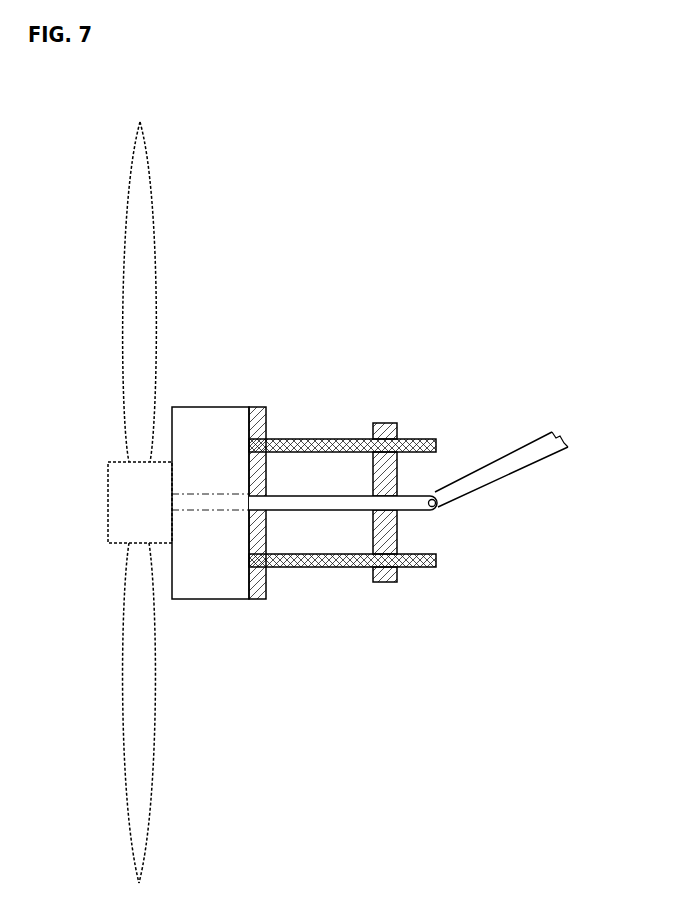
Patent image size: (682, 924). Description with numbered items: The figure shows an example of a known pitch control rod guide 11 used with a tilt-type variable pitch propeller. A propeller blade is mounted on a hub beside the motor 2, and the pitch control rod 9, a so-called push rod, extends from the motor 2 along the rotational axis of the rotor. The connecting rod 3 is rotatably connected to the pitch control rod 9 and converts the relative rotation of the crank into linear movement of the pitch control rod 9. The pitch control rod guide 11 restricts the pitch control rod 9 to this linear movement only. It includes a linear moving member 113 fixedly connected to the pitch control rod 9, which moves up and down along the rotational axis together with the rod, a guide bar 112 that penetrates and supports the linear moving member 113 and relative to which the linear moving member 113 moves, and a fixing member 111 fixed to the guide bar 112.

The motor 2 is at (209, 418).
The connecting rod 3 is at (527, 461).
The pitch control rod 9 is at (305, 506).
The pitch control rod guide 11 is at (338, 400).
The fixing member 111 is at (260, 413).
The guide bar 112 is at (425, 438).
The linear moving member 113 is at (385, 424).